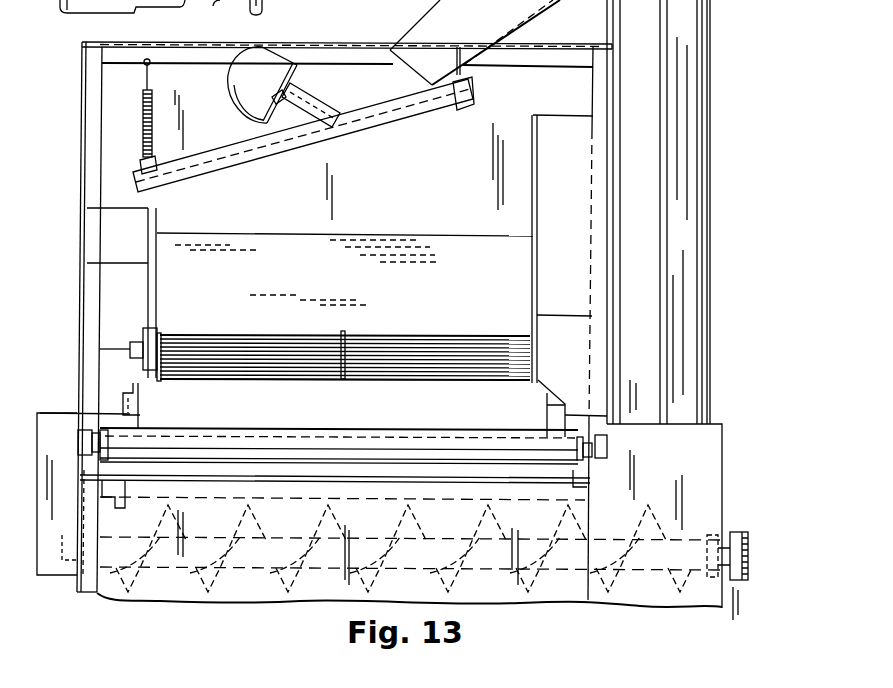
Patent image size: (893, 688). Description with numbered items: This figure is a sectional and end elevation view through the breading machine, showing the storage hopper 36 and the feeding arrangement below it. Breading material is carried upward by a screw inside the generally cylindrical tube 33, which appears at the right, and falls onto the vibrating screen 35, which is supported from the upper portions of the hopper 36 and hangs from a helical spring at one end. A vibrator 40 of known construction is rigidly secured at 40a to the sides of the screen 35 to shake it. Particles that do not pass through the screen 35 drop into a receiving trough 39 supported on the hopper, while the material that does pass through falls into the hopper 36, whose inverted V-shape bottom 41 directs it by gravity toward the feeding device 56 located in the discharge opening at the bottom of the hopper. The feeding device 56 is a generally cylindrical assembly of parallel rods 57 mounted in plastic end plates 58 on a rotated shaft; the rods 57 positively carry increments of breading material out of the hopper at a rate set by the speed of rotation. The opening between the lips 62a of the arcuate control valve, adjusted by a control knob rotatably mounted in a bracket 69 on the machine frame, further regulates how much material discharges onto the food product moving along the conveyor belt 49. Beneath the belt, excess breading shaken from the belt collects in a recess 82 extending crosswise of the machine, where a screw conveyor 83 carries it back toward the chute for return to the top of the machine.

The cylindrical tube 33 is at (700, 105).
The vibrating screen 35 is at (380, 118).
The hopper 36 is at (82, 115).
The receiving trough 39 is at (110, 237).
The vibrator 40 is at (263, 58).
The vibrator securing point 40a is at (318, 100).
The inverted V-shape bottom 41 is at (383, 230).
The conveyor belt 49 is at (344, 431).
The feeding device 56 is at (396, 323).
The parallel rods 57 is at (243, 338).
The plastic end plates 58 is at (157, 330).
The lips 62a is at (311, 383).
The bracket 69 is at (140, 18).
The recess 82 is at (409, 552).
The screw conveyor 83 is at (267, 590).